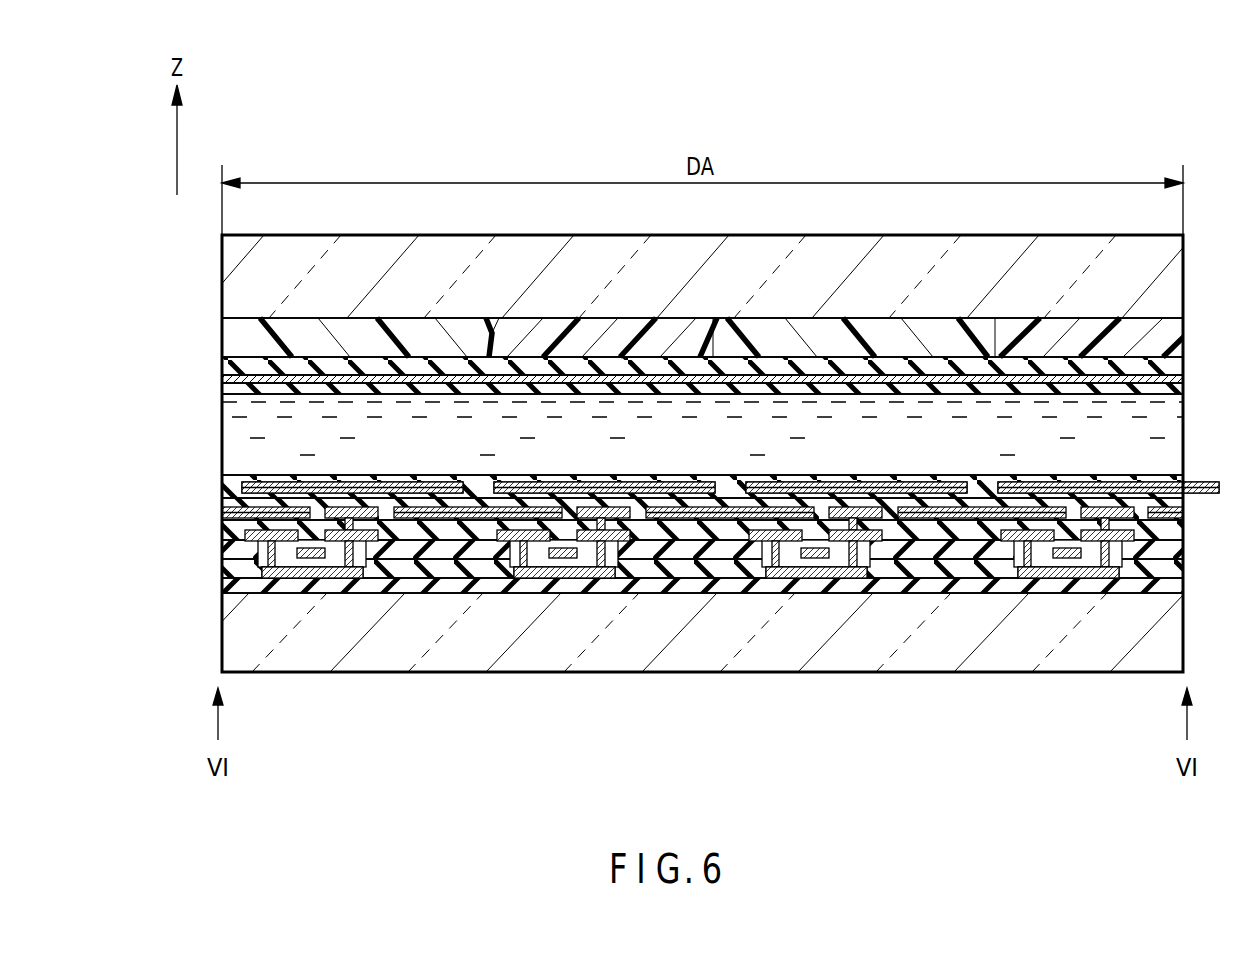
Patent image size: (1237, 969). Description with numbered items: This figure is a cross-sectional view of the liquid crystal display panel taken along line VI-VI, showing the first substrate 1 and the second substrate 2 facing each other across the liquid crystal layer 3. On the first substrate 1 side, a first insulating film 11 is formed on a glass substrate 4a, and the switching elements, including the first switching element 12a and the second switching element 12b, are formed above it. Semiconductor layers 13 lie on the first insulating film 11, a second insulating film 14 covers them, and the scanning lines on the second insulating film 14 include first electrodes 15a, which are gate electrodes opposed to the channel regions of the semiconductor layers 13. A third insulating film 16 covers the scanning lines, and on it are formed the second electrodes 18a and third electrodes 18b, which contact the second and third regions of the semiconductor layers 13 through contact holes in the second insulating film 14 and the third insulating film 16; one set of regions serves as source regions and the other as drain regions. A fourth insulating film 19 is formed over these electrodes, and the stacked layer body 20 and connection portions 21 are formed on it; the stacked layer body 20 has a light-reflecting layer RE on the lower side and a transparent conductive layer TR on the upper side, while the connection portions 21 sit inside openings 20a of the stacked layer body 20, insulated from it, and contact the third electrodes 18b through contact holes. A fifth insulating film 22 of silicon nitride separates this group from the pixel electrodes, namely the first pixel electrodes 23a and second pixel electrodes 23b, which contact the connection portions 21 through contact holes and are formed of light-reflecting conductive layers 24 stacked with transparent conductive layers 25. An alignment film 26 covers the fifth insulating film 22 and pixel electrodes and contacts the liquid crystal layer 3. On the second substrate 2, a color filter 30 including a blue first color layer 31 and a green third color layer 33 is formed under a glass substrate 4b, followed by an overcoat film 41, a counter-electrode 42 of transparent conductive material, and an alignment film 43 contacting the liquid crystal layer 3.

The first substrate 1 is at (1188, 477).
The second substrate 2 is at (1188, 236).
The liquid crystal layer 3 is at (1176, 415).
The glass substrate 4a is at (232, 630).
The glass substrate 4b is at (230, 297).
The first insulating film 11 is at (232, 588).
The first switching element 12a is at (814, 661).
The second switching element 12b is at (562, 661).
The semiconductor layer 13 is at (690, 661).
The second insulating film 14 is at (232, 573).
The first electrode 15a is at (683, 638).
The third insulating film 16 is at (232, 550).
The second electrode 18a is at (683, 629).
The third electrode 18b is at (694, 634).
The fourth insulating film 19 is at (232, 531).
The stacked layer body 20 is at (748, 787).
The opening 20a is at (715, 480).
The connection portion 21 is at (702, 648).
The fifth insulating film 22 is at (232, 500).
The first pixel electrode 23a is at (1194, 438).
The second pixel electrode 23b is at (605, 450).
The light-reflecting conductive layer 24 is at (1134, 456).
The transparent conductive layer 25 is at (1132, 427).
The alignment film 26 is at (232, 479).
The color filter 30 is at (222, 337).
The first color layer 31 is at (363, 330).
The third color layer 33 is at (597, 330).
The overcoat film 41 is at (230, 366).
The counter-electrode 42 is at (230, 379).
The alignment film 43 is at (230, 390).